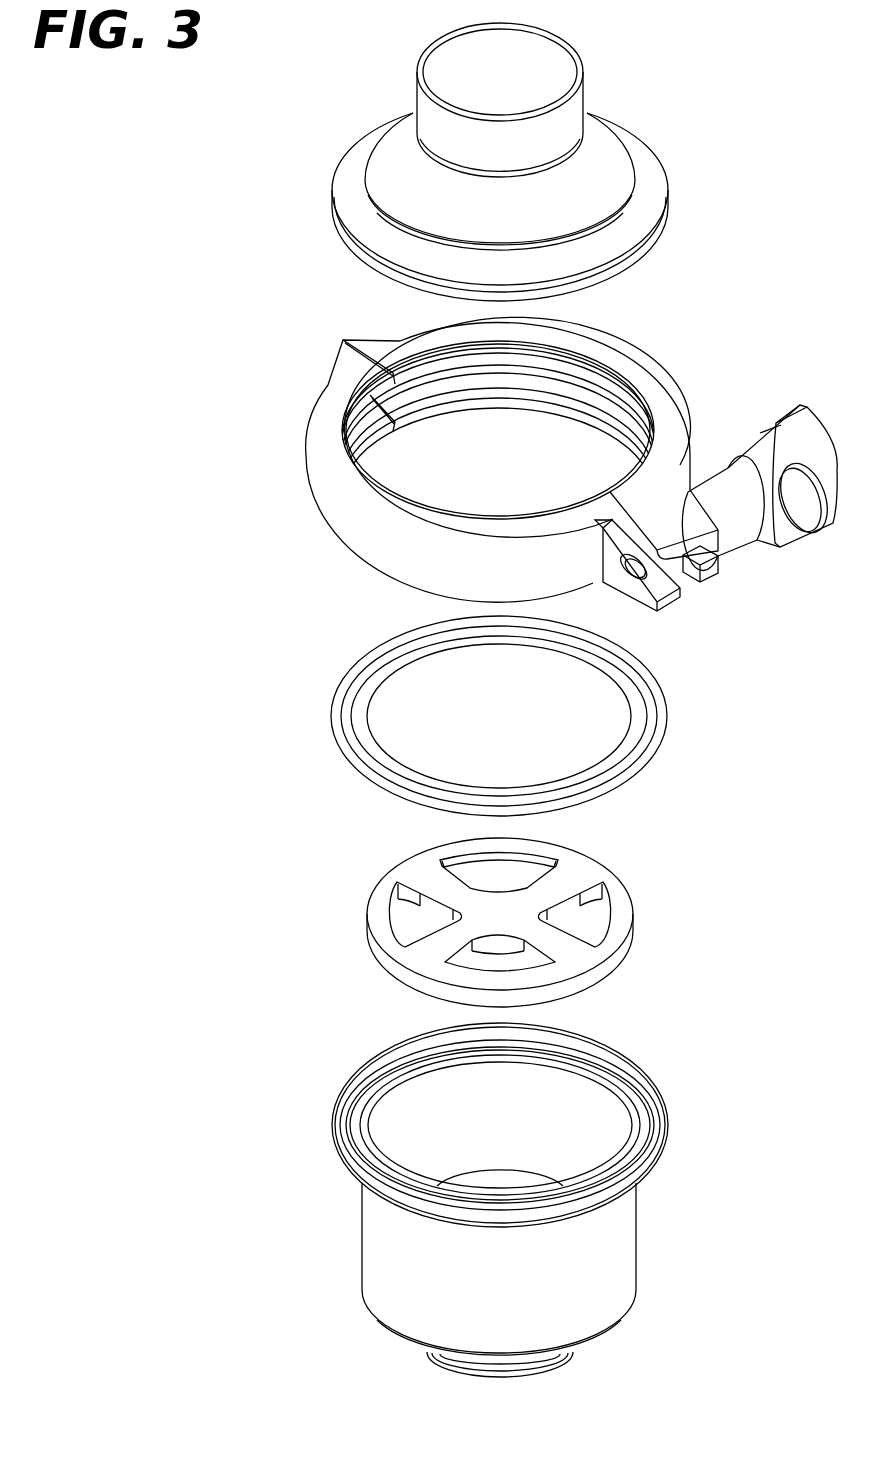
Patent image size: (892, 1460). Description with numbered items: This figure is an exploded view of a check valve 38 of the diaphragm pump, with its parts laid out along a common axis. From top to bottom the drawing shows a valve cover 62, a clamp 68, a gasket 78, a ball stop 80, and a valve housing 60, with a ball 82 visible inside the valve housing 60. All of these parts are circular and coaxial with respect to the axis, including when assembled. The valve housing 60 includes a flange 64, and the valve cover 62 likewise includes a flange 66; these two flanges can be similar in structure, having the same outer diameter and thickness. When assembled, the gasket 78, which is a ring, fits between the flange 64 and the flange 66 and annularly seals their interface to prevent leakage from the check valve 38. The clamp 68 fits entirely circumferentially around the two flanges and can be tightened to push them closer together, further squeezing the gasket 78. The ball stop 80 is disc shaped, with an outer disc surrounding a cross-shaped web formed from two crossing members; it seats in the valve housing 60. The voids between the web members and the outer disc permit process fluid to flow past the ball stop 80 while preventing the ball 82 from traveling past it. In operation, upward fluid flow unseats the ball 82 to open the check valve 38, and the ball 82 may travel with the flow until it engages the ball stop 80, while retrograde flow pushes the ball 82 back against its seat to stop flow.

The check valve 38 is at (182, 693).
The valve cover 62 is at (624, 112).
The flange 66 is at (668, 204).
The clamp 68 is at (690, 384).
The gasket 78 is at (670, 714).
The ball stop 80 is at (632, 926).
The valve housing 60 is at (660, 1270).
The flange 64 is at (670, 1125).
The ball 82 is at (502, 1176).